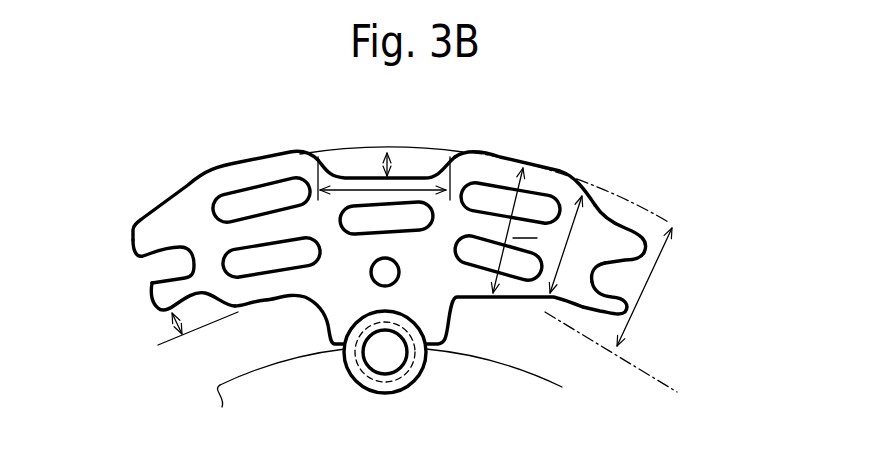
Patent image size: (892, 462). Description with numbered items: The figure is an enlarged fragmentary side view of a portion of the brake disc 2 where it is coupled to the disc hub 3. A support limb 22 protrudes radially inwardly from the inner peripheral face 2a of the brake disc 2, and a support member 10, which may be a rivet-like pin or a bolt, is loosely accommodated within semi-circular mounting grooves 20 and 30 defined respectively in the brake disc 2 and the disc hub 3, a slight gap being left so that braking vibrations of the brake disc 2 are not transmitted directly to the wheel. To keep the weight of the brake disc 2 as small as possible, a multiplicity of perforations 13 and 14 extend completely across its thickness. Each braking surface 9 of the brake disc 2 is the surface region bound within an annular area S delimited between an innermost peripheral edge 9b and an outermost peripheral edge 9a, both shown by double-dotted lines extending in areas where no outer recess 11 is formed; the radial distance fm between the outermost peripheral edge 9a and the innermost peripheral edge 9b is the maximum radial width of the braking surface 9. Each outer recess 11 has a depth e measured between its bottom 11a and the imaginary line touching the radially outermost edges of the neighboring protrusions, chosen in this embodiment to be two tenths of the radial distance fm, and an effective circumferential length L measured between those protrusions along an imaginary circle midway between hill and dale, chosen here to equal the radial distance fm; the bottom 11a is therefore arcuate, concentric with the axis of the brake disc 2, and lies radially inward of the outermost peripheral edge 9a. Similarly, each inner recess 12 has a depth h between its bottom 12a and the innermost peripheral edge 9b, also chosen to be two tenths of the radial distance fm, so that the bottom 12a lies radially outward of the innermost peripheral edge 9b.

The braking surface 9 is at (423, 243).
The outermost peripheral edge 9a is at (670, 223).
The innermost peripheral edge 9b is at (633, 363).
The outer recess 11 is at (434, 157).
The bottom of outer recess 11a is at (631, 217).
The perforation 13 is at (236, 196).
The brake disc 2 is at (499, 151).
The inner peripheral face 2a is at (276, 304).
The inner recess 12 is at (561, 310).
The bottom of inner recess 12a is at (583, 308).
The support limb 22 is at (441, 313).
The perforation 14 is at (382, 278).
The support member 10 is at (434, 359).
The mounting groove 20 is at (409, 374).
The mounting groove 30 is at (373, 372).
The disc hub 3 is at (541, 397).
The annular area S is at (651, 280).
The effective circumferential length L is at (385, 193).
The depth of outer recess e is at (392, 158).
The depth of inner recess h is at (166, 326).
The radial distance fm is at (537, 230).